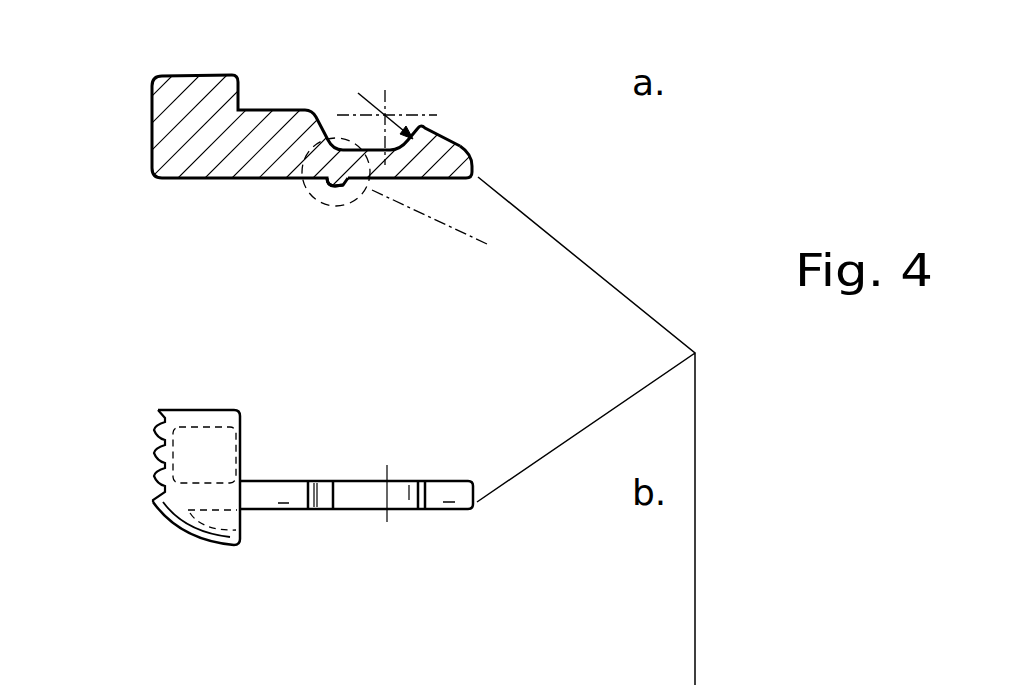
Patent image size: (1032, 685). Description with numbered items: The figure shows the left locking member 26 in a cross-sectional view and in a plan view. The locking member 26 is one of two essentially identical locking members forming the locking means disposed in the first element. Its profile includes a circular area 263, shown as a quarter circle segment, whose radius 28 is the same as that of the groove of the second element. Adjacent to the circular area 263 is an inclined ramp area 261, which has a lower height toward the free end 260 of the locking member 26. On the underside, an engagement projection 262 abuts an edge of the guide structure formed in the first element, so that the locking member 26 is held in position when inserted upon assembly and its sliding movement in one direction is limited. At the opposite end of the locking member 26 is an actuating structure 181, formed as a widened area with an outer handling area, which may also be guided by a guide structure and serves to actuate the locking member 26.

In FIG. 4a, the locking member 26 is at (237, 179).
In FIG. 4b, the locking member 26 is at (273, 510).
In FIG. 4a, the radius 28 is at (362, 101).
In FIG. 4b, the radius 28 is at (398, 680).
In FIG. 4b, the actuating structure 181 is at (162, 460).
In FIG. 4a, the free end 260 is at (474, 166).
In FIG. 4a, the inclined ramp area 261 is at (446, 138).
In FIG. 4a, the engagement projection 262 is at (330, 182).
In FIG. 4a, the circular area 263 is at (420, 73).